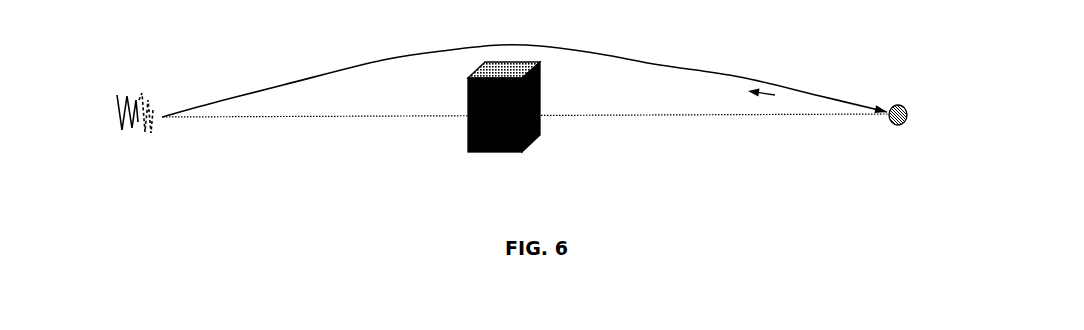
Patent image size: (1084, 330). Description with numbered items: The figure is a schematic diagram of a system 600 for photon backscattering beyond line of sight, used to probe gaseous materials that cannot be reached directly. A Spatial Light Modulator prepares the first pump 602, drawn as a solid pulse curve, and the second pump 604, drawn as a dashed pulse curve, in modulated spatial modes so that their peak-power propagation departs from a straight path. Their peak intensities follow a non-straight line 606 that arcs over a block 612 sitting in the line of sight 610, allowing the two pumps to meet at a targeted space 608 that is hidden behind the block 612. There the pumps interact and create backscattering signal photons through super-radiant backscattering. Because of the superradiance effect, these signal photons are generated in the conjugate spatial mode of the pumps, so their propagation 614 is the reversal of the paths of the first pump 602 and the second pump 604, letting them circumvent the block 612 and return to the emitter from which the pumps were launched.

The system 600 is at (293, 234).
The Pump 1 602 is at (91, 121).
The Pump 2 604 is at (210, 92).
The non-straight line 606 is at (515, 74).
The targeted space 608 is at (911, 126).
The line of sight 610 is at (525, 131).
The block 612 is at (476, 107).
The signal photon back propagation 614 is at (816, 59).